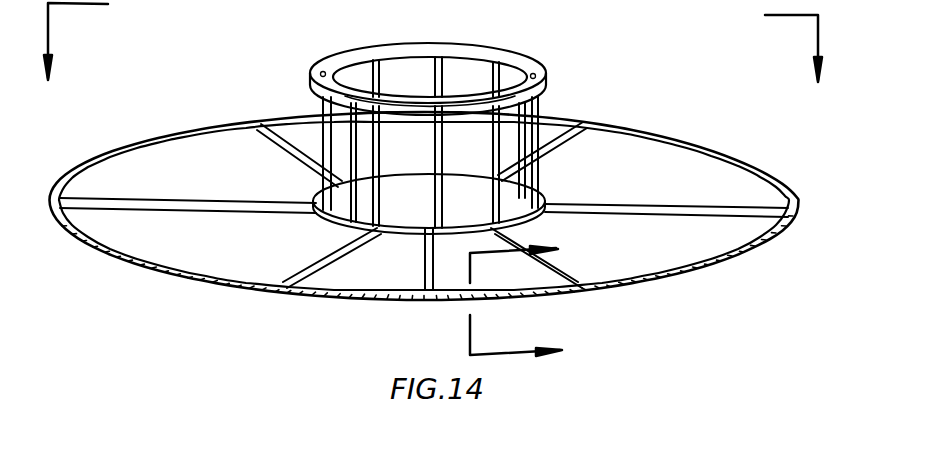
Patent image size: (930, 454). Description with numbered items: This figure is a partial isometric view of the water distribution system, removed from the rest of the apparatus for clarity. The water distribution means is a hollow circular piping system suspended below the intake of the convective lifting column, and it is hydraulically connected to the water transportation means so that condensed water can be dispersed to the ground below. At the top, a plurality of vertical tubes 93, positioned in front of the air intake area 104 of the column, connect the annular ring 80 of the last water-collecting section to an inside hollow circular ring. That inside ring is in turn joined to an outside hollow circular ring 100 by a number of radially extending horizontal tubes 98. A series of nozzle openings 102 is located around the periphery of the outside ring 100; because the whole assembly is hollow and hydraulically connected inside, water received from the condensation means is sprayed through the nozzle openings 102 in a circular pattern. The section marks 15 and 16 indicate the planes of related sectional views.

The annular ring 80 is at (505, 52).
The vertical tubes 93 is at (312, 118).
The air intake area 104 is at (505, 143).
The radially extending horizontal tubes 98 is at (200, 213).
The outside hollow circular ring 100 is at (647, 290).
The nozzle openings 102 is at (362, 300).
The section line 15- 15 is at (427, 63).
The section line 16- 16 is at (534, 296).